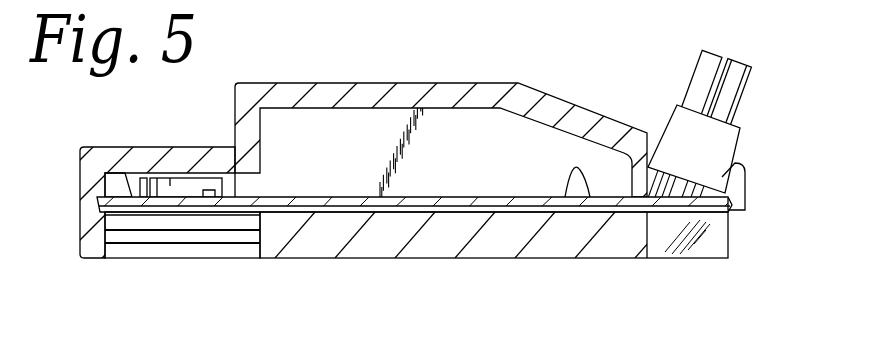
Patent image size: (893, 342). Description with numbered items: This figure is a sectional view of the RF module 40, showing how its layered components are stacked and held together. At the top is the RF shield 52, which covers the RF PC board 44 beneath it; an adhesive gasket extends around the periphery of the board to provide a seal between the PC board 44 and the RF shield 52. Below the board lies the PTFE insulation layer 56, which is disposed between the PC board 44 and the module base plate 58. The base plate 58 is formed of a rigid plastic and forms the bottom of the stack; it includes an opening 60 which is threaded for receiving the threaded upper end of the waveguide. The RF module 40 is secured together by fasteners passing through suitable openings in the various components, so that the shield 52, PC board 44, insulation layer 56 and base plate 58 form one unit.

The RF module 40 is at (619, 87).
The RF PC board 44 is at (585, 186).
The RF shield 52 is at (453, 82).
The PTFE insulation layer 56 is at (507, 212).
The module base plate 58 is at (427, 250).
The opening 60 is at (196, 254).